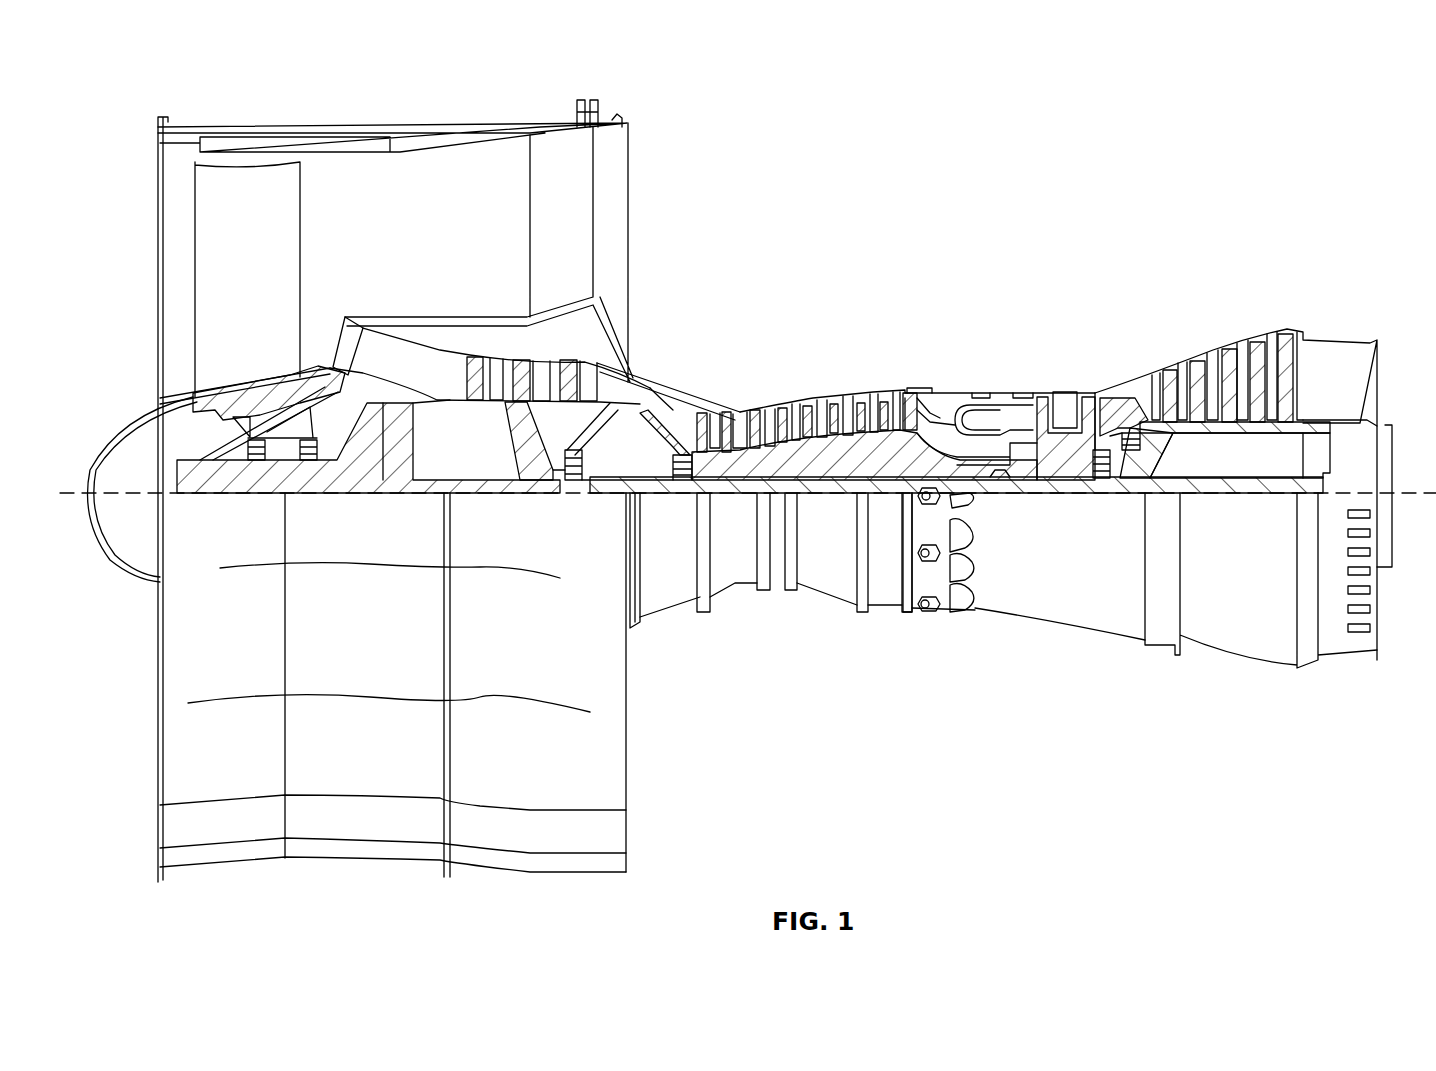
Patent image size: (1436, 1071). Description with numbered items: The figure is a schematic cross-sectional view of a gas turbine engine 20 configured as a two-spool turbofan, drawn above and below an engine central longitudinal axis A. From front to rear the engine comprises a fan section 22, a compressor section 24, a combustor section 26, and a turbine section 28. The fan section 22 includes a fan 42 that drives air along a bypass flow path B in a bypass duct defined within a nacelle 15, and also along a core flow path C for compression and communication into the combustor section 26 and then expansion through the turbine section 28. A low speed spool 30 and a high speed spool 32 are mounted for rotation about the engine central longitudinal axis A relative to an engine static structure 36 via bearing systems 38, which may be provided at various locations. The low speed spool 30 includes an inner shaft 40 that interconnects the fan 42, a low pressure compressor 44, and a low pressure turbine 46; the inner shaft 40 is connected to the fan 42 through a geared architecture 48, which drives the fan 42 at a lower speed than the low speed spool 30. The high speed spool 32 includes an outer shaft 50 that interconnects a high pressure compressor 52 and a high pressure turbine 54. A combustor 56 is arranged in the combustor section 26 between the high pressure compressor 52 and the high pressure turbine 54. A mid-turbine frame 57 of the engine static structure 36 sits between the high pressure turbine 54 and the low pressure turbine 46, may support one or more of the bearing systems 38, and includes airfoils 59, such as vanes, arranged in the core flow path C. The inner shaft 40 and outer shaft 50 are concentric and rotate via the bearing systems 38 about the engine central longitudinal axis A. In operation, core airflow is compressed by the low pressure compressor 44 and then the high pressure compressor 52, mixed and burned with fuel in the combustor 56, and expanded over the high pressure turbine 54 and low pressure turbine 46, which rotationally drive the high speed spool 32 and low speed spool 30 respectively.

The gas turbine engine 20 is at (1200, 162).
The fan section 22 is at (255, 117).
The compressor section 24 is at (815, 352).
The combustor section 26 is at (960, 360).
The turbine section 28 is at (1130, 332).
The low speed spool 30 is at (845, 497).
The high speed spool 32 is at (890, 445).
The engine static structure 36 is at (888, 610).
The bearing systems 38 is at (572, 478).
The inner shaft 40 is at (642, 495).
The fan 42 is at (266, 267).
The low pressure compressor 44 is at (570, 375).
The low pressure turbine 46 is at (1232, 368).
The geared architecture 48 is at (395, 468).
The outer shaft 50 is at (1002, 465).
The high pressure compressor 52 is at (805, 465).
The high pressure turbine 54 is at (1070, 390).
The combustor 56 is at (990, 410).
The mid-turbine frame 57 is at (1115, 405).
The airfoils 59 is at (1165, 425).
The nacelle 15 is at (400, 127).
The engine central longitudinal axis A is at (1400, 490).
The bypass flow path B is at (338, 207).
The core flow path C is at (380, 360).